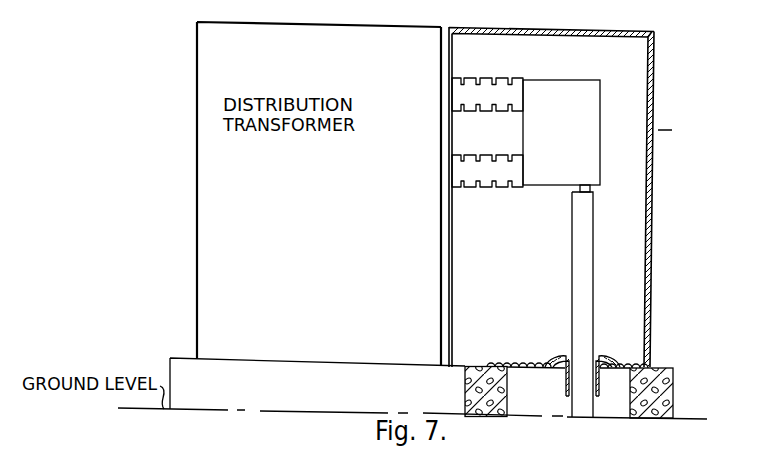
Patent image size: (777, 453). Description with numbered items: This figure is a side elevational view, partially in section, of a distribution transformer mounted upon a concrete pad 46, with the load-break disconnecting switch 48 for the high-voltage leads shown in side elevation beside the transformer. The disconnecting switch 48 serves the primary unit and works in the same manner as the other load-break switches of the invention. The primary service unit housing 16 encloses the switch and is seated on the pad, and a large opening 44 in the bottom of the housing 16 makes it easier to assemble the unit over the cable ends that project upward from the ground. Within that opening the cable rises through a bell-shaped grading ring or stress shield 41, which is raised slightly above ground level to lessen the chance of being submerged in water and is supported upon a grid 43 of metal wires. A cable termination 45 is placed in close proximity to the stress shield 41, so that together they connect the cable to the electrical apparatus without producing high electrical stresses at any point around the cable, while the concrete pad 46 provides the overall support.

The primary service unit housing 16 is at (652, 197).
The disconnecting switch 48 is at (600, 96).
The cable termination 45 is at (593, 190).
The bell-shaped shield 41 is at (604, 366).
The grid of metal wires 43 is at (530, 360).
The opening 44 is at (481, 366).
The concrete pad 46 is at (671, 400).